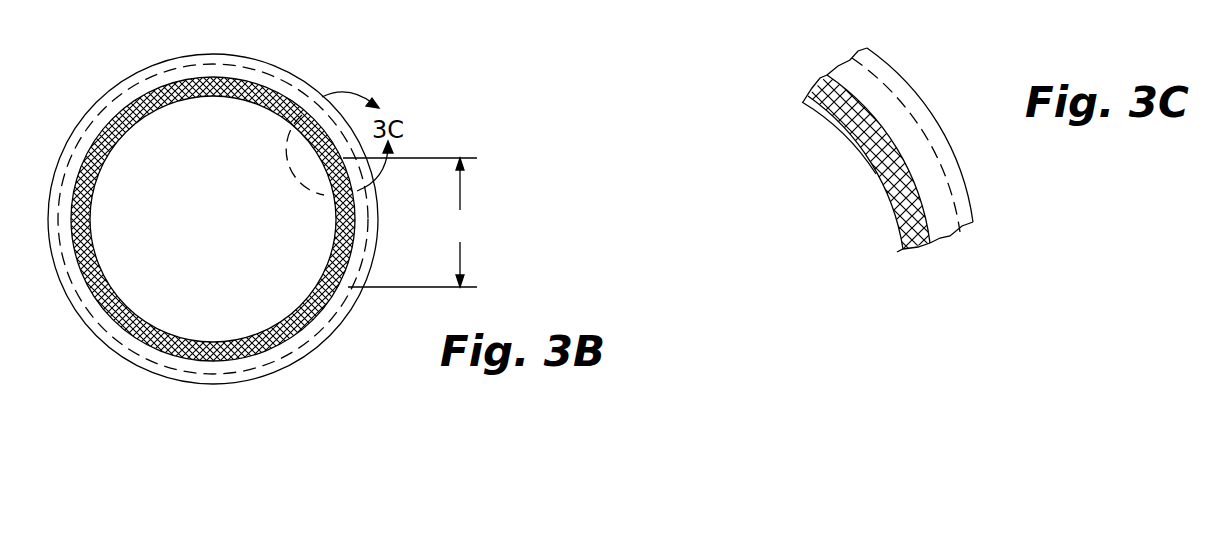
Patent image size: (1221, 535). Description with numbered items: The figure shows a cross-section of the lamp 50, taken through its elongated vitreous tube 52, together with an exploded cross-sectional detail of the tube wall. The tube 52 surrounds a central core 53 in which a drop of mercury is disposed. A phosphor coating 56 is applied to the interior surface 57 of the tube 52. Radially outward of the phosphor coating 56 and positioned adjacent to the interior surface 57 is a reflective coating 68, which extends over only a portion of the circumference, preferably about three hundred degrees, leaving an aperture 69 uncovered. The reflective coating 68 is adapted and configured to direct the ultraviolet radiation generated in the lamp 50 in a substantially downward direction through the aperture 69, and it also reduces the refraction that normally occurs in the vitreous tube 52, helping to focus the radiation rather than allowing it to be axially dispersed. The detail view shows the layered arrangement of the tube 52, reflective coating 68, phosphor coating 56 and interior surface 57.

In FIG. 3B, the lamp 50 is at (97, 96).
In FIG. 3B, the vitreous tube 52 is at (341, 321).
In FIG. 3C, the vitreous tube 52 is at (900, 150).
In FIG. 3B, the central core 53 is at (174, 285).
In FIG. 3C, the phosphor coating 56 is at (885, 191).
In FIG. 3C, the interior surface 57 is at (898, 251).
In FIG. 3C, the reflective coating 68 is at (850, 114).
In FIG. 3B, the aperture 69 is at (412, 222).